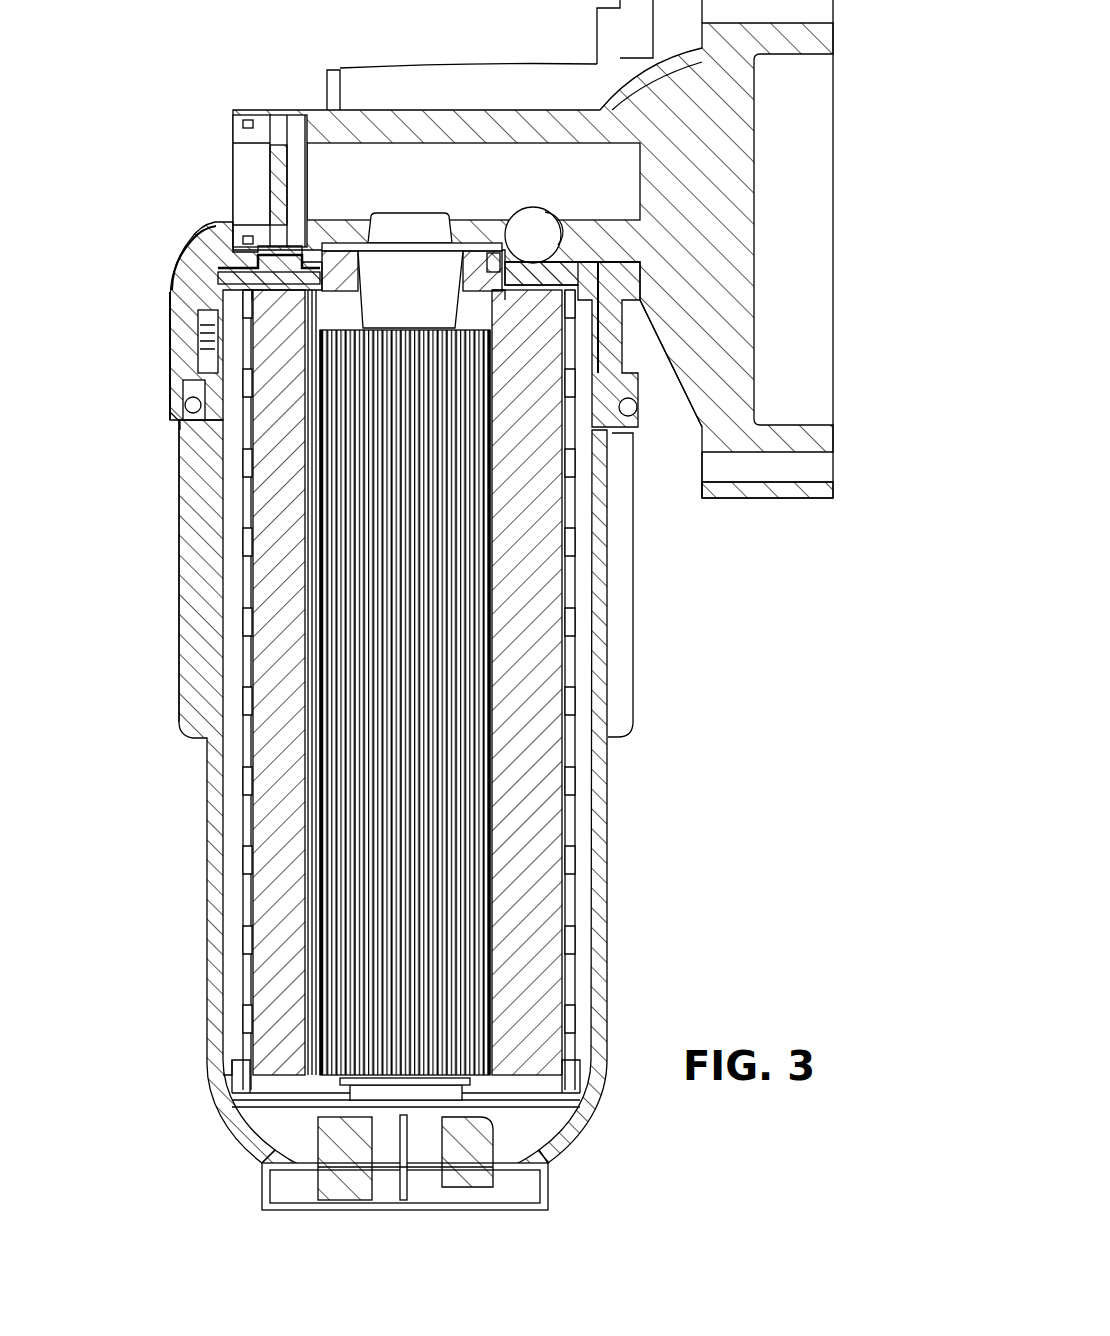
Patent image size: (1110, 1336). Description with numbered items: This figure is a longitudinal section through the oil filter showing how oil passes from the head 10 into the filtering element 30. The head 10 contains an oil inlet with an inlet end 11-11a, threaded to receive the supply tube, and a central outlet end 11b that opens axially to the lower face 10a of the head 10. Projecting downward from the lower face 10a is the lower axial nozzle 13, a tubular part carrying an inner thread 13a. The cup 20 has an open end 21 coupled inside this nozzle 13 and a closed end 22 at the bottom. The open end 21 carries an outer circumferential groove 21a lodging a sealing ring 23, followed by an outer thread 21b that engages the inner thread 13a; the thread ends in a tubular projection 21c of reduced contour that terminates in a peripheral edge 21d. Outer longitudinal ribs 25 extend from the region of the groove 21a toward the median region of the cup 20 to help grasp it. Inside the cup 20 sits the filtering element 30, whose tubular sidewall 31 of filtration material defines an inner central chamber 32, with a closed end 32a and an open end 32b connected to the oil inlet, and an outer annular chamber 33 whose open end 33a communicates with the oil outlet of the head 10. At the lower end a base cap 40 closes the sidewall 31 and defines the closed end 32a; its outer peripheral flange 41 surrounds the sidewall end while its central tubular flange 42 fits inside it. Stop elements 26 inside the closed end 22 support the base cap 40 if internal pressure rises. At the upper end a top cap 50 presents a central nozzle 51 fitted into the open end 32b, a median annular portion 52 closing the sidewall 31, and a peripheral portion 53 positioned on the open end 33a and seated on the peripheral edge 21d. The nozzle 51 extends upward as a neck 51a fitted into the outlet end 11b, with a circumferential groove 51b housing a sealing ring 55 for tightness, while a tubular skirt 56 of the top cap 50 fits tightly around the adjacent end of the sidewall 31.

The head 10 is at (470, 52).
The lower face 10a is at (612, 350).
The central outlet end 11b is at (440, 243).
The oil inlet and inlet end 11-11a is at (556, 220).
The lower axial nozzle 13 is at (167, 278).
The inner thread 13a is at (223, 335).
The cup 20 is at (207, 800).
The open end 21 is at (620, 372).
The outer circumferential groove 21a is at (178, 410).
The outer thread 21b is at (200, 333).
The tubular projection 21c is at (217, 307).
The peripheral edge 21d is at (217, 300).
The closed end 22 is at (240, 1160).
The sealing ring 23 is at (185, 390).
The outer longitudinal ribs 25 is at (199, 580).
The stop elements 26 is at (495, 1150).
The filtering element 30 is at (590, 882).
The tubular sidewall 31 is at (531, 572).
The inner central chamber 32 is at (362, 663).
The closed end 32a is at (272, 1097).
The open end 32b is at (305, 318).
The outer annular chamber 33 is at (582, 822).
The open end 33a is at (590, 305).
The base cap 40 is at (287, 1088).
The outer peripheral flange 41 is at (218, 1075).
The central tubular flange 42 is at (445, 1073).
The top cap 50 is at (290, 265).
The central nozzle 51 is at (455, 318).
The neck 51a is at (362, 262).
The circumferential groove 51b is at (522, 258).
The median annular portion 52 is at (507, 298).
The peripheral portion 53 is at (598, 248).
The sealing ring 55 is at (490, 258).
The tubular skirt 56 is at (248, 305).